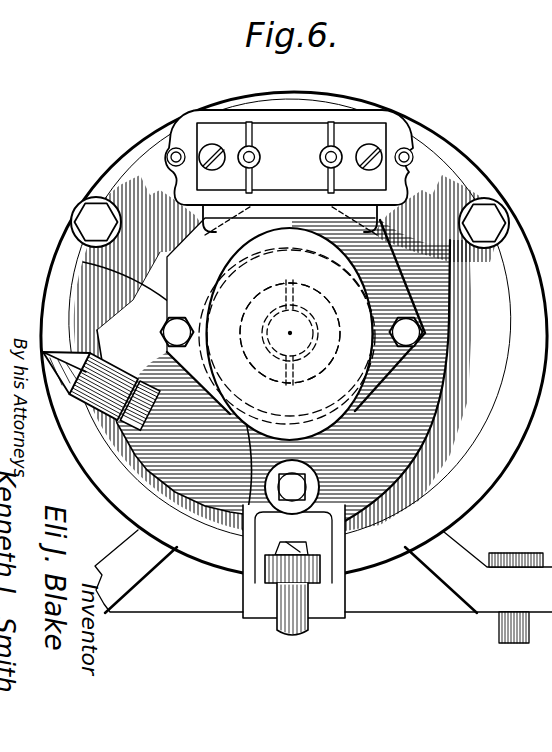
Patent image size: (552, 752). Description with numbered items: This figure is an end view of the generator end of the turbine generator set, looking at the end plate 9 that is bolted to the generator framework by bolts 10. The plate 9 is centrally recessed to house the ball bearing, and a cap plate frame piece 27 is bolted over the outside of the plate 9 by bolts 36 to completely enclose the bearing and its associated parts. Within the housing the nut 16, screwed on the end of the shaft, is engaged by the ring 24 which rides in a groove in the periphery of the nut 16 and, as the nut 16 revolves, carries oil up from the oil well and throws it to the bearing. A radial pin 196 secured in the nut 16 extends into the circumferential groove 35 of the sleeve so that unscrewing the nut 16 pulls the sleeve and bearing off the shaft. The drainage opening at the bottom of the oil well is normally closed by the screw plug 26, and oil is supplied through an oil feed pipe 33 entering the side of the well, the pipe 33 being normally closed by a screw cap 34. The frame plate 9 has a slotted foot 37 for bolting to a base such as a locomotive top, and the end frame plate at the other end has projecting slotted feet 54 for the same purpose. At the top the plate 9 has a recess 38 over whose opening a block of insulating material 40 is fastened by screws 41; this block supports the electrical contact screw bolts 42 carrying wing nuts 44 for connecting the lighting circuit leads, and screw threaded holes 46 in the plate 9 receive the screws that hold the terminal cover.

The end plate 9 is at (493, 460).
The bolts 10 is at (484, 223).
The nut 16 is at (322, 364).
The ring 24 is at (340, 307).
The screw plug 26 is at (292, 487).
The cap plate frame piece 27 is at (277, 347).
The oil feed pipe 33 is at (146, 393).
The screw cap 34 is at (113, 363).
The circumferential groove 35 is at (263, 316).
The bolts 36 is at (397, 323).
The slotted foot 37 is at (267, 597).
The recess 38 is at (187, 137).
The block of insulating material 40 is at (299, 138).
The screws 41 is at (365, 150).
The electrical contact screw bolts 42 is at (328, 160).
The wing nuts 44 is at (338, 147).
The screw threaded holes 46 is at (411, 155).
The projecting slotted feet 54 is at (496, 607).
The radial pin 196 is at (290, 384).